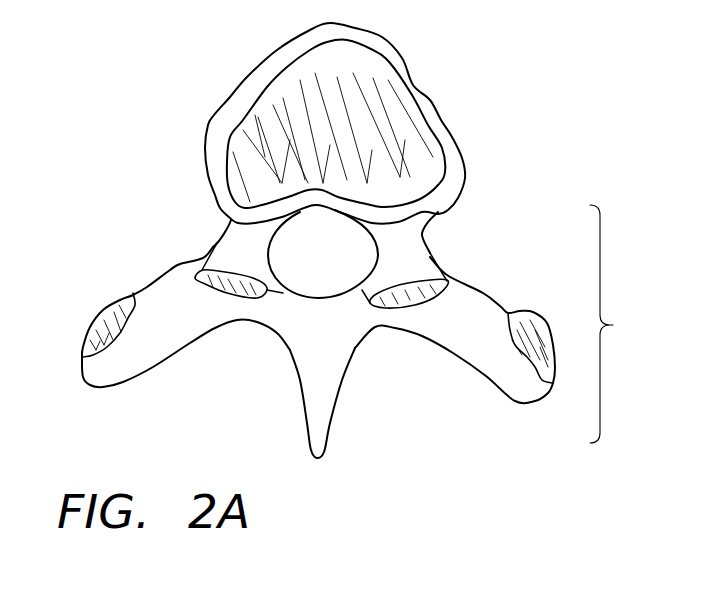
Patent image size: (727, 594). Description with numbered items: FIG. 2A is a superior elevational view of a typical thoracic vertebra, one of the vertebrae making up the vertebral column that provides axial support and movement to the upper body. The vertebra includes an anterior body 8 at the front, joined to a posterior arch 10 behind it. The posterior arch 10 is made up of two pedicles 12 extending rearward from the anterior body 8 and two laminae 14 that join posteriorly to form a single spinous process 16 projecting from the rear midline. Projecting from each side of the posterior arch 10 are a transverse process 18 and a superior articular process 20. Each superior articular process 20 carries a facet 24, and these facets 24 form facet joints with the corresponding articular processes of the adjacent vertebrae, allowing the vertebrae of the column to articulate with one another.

The anterior body 8 is at (363, 102).
The posterior arch 10 is at (619, 324).
The pedicle 12 is at (237, 235).
The lamina 14 is at (270, 317).
The spinous process 16 is at (318, 393).
The transverse process 18 is at (136, 365).
The superior articular process 20 is at (223, 262).
The facet 24 is at (221, 292).